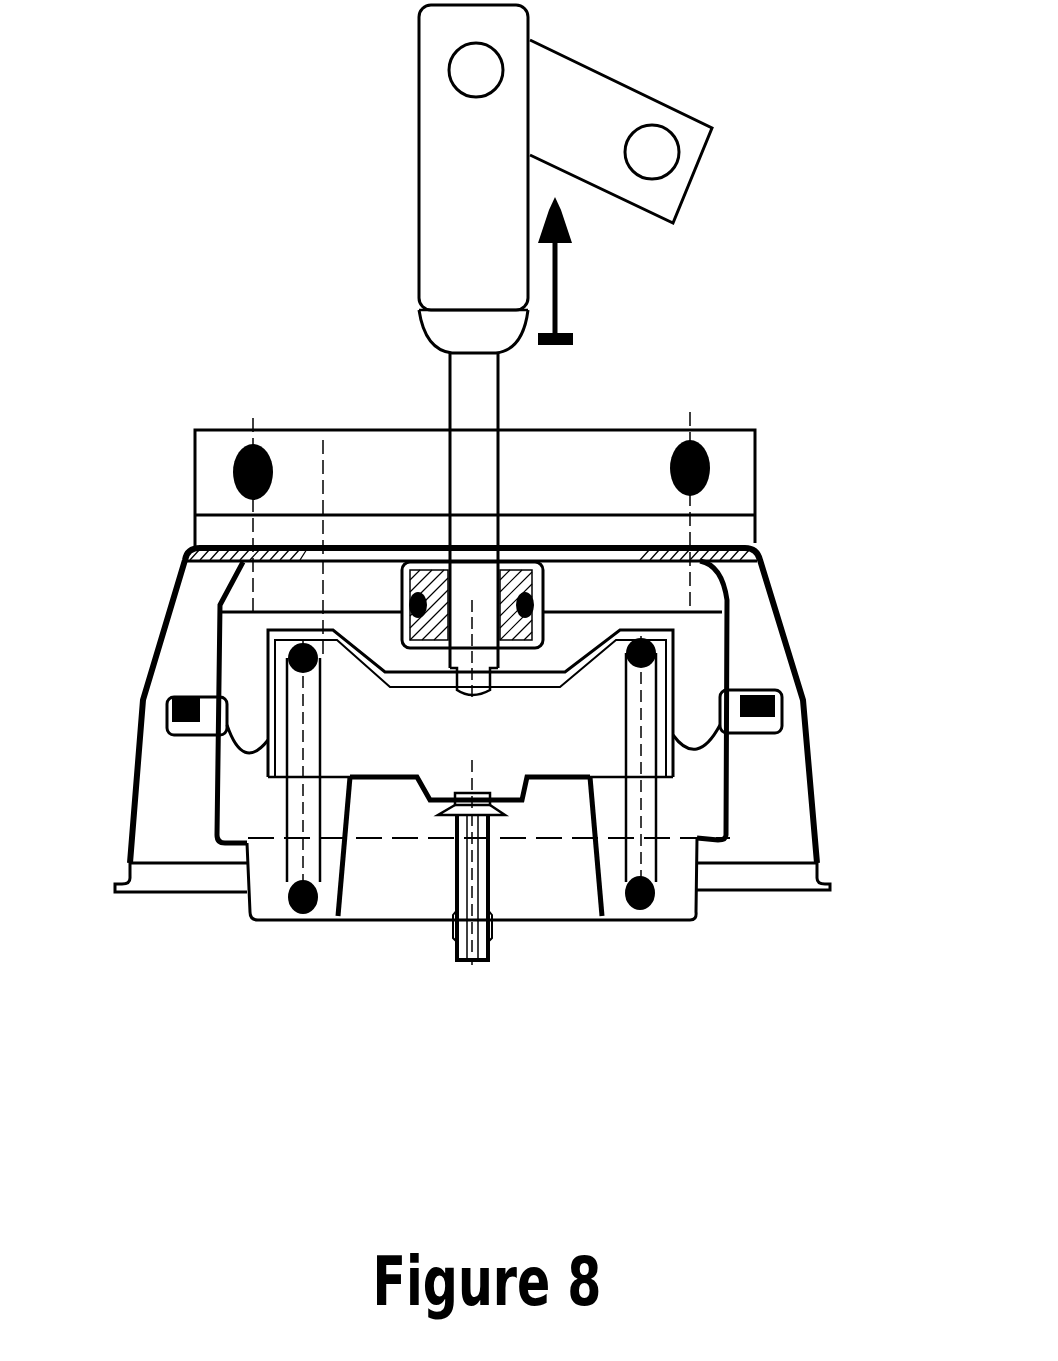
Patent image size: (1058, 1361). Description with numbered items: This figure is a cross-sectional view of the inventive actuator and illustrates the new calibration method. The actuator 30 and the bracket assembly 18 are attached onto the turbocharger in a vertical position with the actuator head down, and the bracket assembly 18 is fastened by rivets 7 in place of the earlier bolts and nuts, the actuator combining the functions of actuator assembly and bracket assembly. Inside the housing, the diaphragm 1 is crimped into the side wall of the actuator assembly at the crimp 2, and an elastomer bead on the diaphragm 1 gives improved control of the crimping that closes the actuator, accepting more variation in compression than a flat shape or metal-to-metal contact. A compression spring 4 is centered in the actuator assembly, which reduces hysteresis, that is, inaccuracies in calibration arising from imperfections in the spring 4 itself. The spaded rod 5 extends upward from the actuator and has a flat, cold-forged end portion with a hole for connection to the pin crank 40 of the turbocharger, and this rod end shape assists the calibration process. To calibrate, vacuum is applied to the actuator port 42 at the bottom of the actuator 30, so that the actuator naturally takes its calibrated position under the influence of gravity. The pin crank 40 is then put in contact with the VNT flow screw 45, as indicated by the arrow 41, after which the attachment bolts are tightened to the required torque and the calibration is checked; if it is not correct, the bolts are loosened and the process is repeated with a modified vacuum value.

The diaphragm 1 is at (230, 757).
The crimp 2 is at (170, 720).
The compression spring 4 is at (283, 847).
The spaded rod 5 is at (485, 408).
The rivets 7 is at (232, 468).
The bracket assembly 18 is at (730, 447).
The actuator 30 is at (788, 524).
The pin crank 40 is at (458, 325).
The arrow 41 is at (558, 287).
The actuator port 42 is at (490, 957).
The VNT flow screw 45 is at (648, 152).